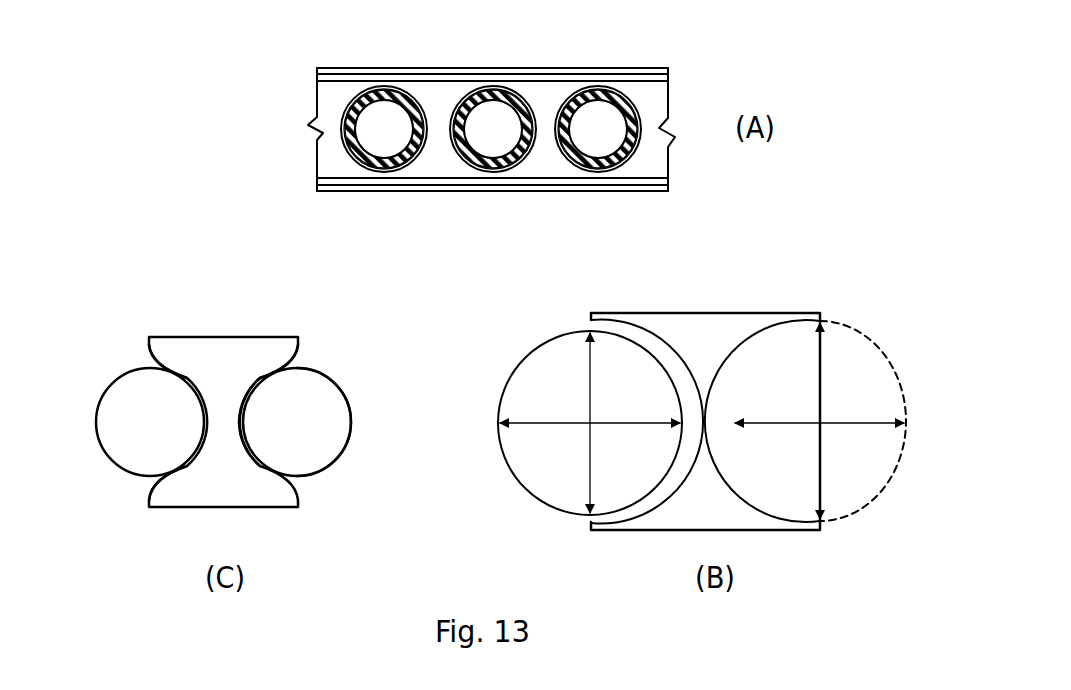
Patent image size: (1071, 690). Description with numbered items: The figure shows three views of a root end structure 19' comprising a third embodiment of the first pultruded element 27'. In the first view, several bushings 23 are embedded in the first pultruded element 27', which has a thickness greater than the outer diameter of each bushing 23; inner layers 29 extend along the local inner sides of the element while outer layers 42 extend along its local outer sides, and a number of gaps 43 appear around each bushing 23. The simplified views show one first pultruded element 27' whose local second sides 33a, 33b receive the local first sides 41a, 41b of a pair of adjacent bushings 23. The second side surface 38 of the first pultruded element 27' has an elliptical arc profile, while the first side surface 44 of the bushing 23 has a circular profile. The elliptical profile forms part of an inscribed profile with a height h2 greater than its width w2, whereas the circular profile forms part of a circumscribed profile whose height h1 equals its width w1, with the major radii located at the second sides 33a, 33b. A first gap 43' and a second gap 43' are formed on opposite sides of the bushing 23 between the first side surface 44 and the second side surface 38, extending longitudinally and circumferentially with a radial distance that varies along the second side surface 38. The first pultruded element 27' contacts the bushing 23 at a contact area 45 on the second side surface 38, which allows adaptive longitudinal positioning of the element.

The root end structure 19' is at (440, 129).
The bushing 23 is at (500, 94).
The first pultruded element 27' is at (484, 294).
The inner layer 29 is at (647, 68).
The outer layer 42 is at (640, 191).
The gap 43 is at (491, 95).
The first and second gaps 43' is at (128, 422).
The second side surface 38 is at (259, 373).
The first side surface 44 is at (290, 362).
The contact area 45 is at (247, 421).
The local first side 41a is at (349, 420).
The local first side 41b is at (503, 392).
The local second side 33a is at (592, 318).
The local second side 33b is at (820, 318).
The height of circumscribed profile h1 is at (592, 378).
The width of circumscribed profile w1 is at (622, 426).
The height of inscribed profile h2 is at (822, 376).
The width of inscribed profile w2 is at (852, 426).